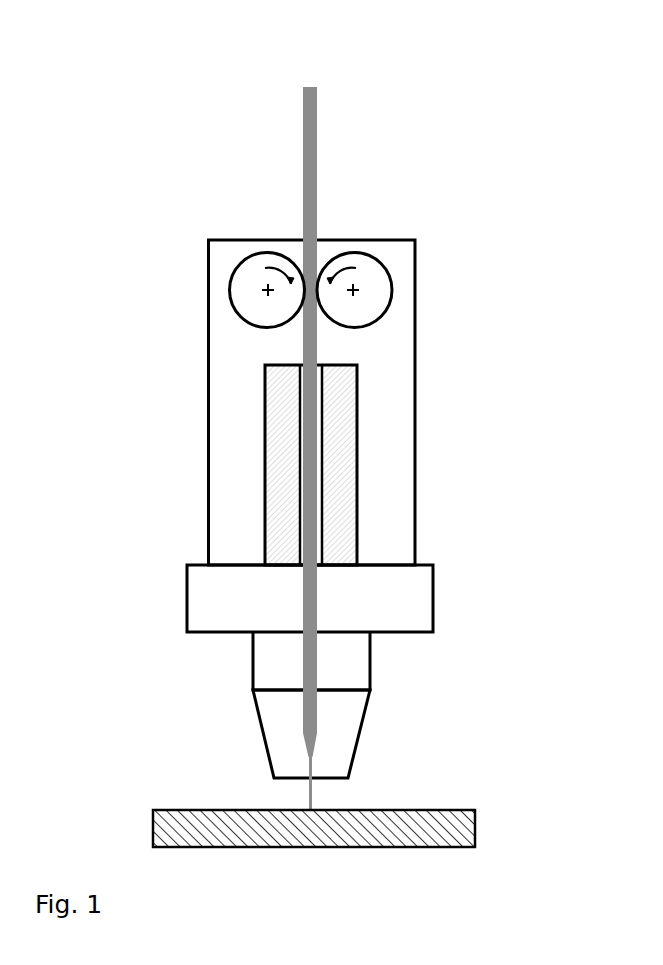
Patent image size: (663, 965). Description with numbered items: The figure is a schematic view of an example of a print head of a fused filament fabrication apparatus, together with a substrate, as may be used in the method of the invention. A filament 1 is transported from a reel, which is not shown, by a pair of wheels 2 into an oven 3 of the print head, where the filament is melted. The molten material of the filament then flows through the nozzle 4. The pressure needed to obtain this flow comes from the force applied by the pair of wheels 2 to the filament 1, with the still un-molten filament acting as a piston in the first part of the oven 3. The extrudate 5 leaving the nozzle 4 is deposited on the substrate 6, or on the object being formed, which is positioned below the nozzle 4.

The filament 1 is at (309, 144).
The pair of wheels 2 is at (245, 290).
The oven 3 is at (278, 533).
The nozzle 4 is at (278, 739).
The extrudate 5 is at (311, 790).
The substrate 6 is at (217, 829).